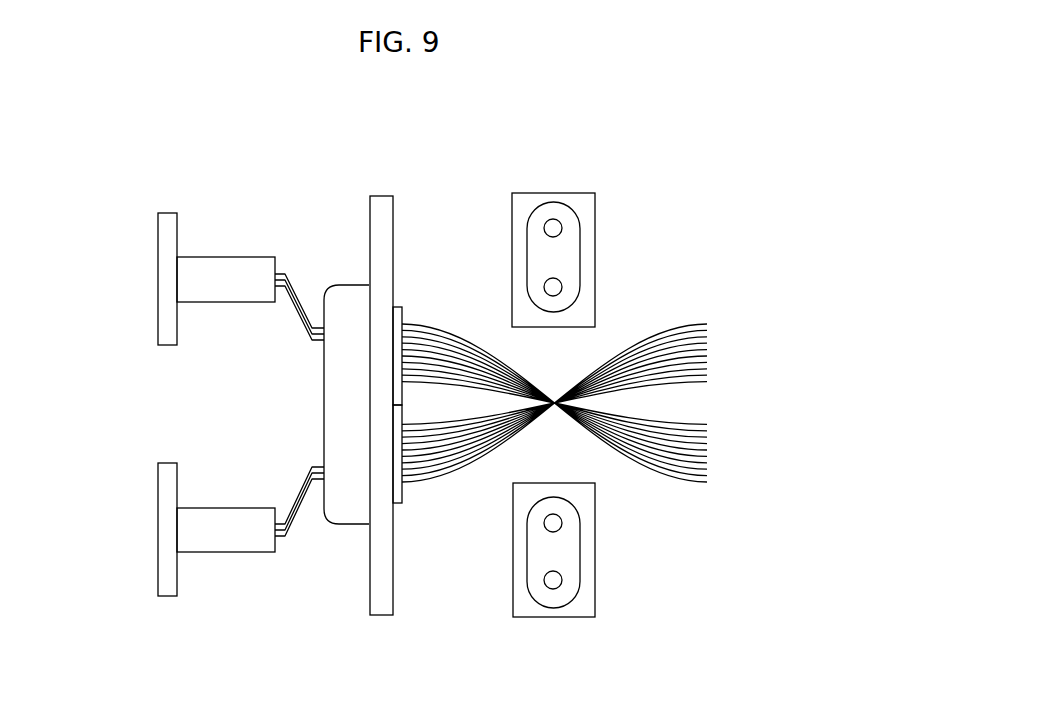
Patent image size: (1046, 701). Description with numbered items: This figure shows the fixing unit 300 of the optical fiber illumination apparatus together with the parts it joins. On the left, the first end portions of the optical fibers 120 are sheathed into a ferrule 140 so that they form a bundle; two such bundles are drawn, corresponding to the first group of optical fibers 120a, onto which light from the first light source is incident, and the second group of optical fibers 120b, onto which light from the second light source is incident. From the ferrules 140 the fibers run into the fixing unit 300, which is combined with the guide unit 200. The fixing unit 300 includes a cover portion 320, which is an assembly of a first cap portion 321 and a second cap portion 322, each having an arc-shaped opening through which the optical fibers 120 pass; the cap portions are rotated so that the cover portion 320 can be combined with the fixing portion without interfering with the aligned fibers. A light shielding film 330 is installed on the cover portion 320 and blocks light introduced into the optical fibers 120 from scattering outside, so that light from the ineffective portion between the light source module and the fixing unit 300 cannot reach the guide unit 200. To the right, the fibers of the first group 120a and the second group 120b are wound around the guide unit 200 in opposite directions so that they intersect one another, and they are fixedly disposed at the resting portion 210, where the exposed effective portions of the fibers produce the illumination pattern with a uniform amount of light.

The optical fibers 120 is at (206, 405).
The first group of optical fibers 120a is at (292, 503).
The second group of optical fibers 120b is at (295, 305).
The ferrule 140 is at (213, 265).
The guide unit 200 is at (575, 468).
The resting portion 210 is at (555, 352).
The fixing unit 300 is at (405, 395).
The cover portion 320 is at (456, 504).
The first cap portion 321 is at (397, 385).
The second cap portion 322 is at (397, 492).
The light shielding film 330 is at (387, 196).